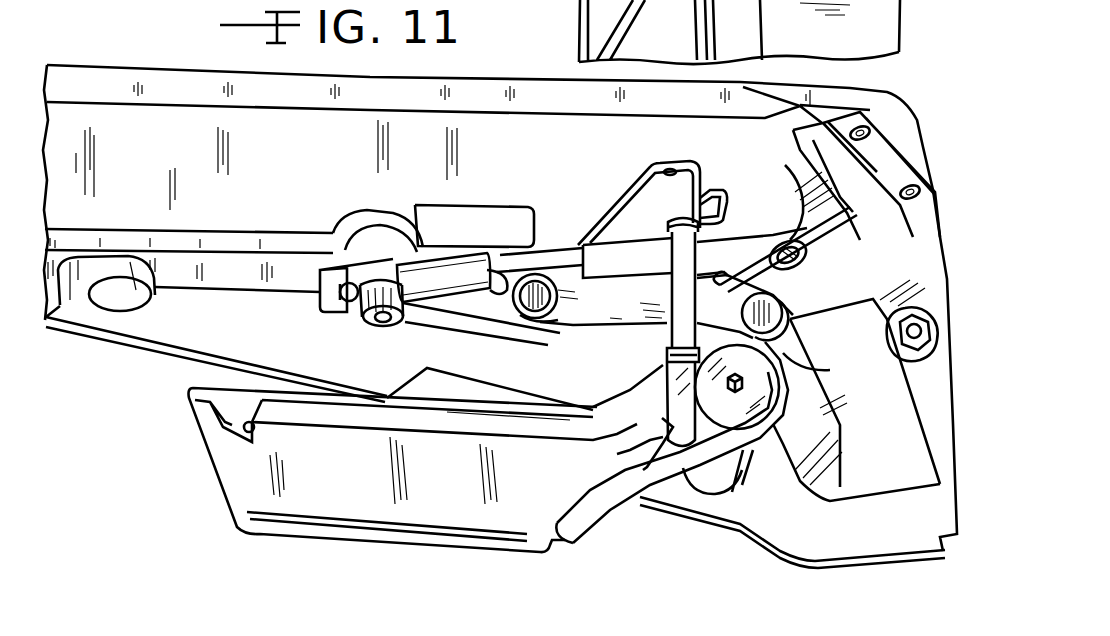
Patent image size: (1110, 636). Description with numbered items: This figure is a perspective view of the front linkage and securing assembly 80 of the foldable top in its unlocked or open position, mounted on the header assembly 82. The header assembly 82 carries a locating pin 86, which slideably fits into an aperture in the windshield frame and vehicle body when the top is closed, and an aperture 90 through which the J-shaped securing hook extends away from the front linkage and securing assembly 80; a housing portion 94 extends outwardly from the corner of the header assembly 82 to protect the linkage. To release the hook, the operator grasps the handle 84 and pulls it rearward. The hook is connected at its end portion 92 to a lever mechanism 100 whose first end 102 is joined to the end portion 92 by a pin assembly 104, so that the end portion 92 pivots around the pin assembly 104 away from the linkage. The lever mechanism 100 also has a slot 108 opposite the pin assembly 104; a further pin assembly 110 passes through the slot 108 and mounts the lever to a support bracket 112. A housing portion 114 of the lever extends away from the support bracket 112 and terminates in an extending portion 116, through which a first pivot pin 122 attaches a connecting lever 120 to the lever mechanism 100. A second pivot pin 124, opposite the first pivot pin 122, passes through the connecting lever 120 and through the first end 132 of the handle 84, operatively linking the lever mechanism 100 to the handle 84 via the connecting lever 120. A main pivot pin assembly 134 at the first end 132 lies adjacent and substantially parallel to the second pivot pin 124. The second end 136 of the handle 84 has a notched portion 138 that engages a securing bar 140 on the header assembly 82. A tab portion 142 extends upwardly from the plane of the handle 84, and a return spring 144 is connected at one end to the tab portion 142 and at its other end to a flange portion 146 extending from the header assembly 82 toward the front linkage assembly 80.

The front linkage and securing assembly 80 is at (379, 203).
The header assembly 82 is at (903, 137).
The handle 84 is at (333, 534).
The locating pin 86 is at (913, 360).
The aperture 90 is at (903, 160).
The end portion of the securing hook 92 is at (806, 267).
The housing portion 94 is at (153, 345).
The lever mechanism 100 is at (600, 213).
The first end of the lever mechanism 102 is at (763, 230).
The pin assembly 104 is at (787, 167).
The slot 108 is at (510, 262).
The further pin assembly 110 is at (343, 312).
The support bracket 112 is at (208, 228).
The housing portion 114 is at (442, 329).
The extending portion 116 is at (533, 335).
The connecting lever 120 is at (636, 330).
The first pivot pin 122 is at (556, 294).
The second pivot pin 124 is at (735, 308).
The first end of the handle 132 is at (795, 340).
The main pivot pin assembly 134 is at (800, 374).
The second end of the handle 136 is at (223, 514).
The notched portion 138 is at (253, 433).
The securing bar 140 is at (638, 8).
The tab portion 142 is at (617, 454).
The return spring 144 is at (672, 258).
The flange portion 146 is at (661, 162).